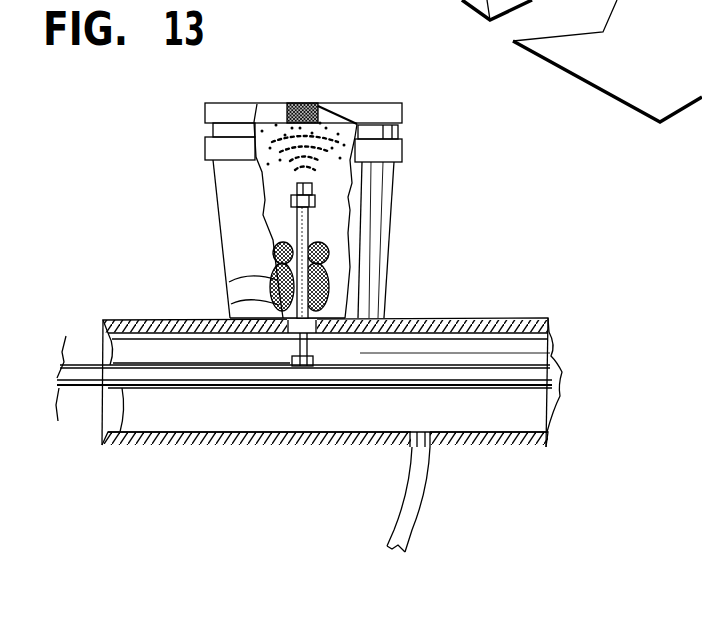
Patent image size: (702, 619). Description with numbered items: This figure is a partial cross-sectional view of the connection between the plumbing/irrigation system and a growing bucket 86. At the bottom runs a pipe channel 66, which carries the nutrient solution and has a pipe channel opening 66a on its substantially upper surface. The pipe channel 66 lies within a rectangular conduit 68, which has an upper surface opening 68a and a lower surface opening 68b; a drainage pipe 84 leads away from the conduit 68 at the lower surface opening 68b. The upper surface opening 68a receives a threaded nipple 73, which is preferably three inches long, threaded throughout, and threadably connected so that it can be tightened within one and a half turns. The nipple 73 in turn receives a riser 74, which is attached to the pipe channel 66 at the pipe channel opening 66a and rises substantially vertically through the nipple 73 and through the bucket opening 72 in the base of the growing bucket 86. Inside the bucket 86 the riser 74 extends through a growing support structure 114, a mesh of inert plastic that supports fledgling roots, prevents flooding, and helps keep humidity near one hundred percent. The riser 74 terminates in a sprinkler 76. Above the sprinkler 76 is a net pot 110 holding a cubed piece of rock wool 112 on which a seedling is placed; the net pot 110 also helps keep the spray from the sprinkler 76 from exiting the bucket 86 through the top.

The pipe channel 66 is at (247, 388).
The pipe channel opening 66a is at (283, 351).
The rectangular conduit 68 is at (495, 318).
The upper surface opening 68a is at (380, 317).
The lower surface opening 68b is at (447, 432).
The bucket opening 72 is at (228, 284).
The threaded nipple 73 is at (232, 307).
The riser 74 is at (290, 208).
The sprinkler 76 is at (290, 190).
The drainage pipe 84 is at (423, 507).
The growing bucket 86 is at (388, 198).
The net pot 110 is at (296, 103).
The rock wool 112 is at (308, 103).
The growing support structure 114 is at (333, 268).